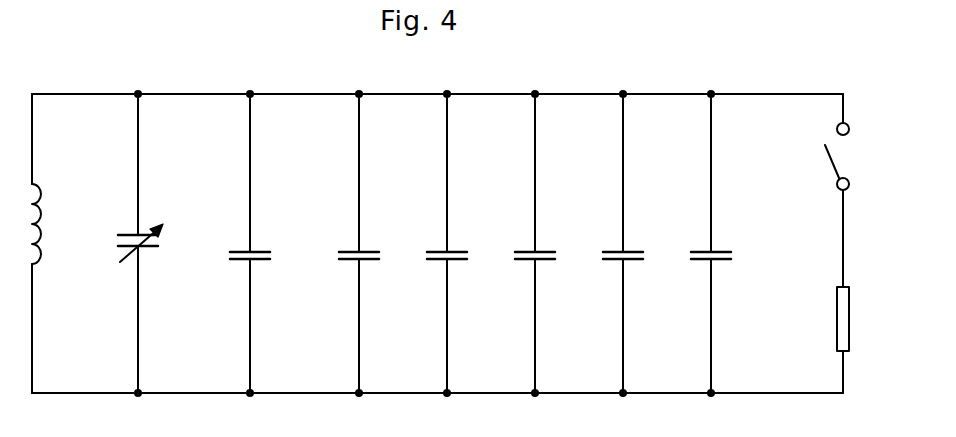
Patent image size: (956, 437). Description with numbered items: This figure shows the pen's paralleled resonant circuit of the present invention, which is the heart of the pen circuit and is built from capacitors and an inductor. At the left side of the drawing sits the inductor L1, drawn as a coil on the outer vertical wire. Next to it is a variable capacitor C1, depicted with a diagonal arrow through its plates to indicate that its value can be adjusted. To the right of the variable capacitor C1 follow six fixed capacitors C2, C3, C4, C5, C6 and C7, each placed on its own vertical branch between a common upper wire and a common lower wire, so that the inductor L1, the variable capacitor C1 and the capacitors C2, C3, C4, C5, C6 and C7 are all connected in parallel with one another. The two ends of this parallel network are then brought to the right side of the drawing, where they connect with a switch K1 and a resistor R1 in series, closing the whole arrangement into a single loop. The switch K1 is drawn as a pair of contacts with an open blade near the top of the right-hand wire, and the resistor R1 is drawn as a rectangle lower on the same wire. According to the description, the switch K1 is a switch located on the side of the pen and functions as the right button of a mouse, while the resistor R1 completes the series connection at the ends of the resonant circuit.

The inductor L1 is at (44, 224).
The variable capacitor C1 is at (147, 243).
The capacitor C2 is at (259, 243).
The capacitor C3 is at (376, 243).
The capacitor C4 is at (464, 243).
The capacitor C5 is at (552, 243).
The capacitor C6 is at (636, 243).
The capacitor C7 is at (721, 243).
The switch K1 is at (842, 190).
The resistor R1 is at (858, 340).